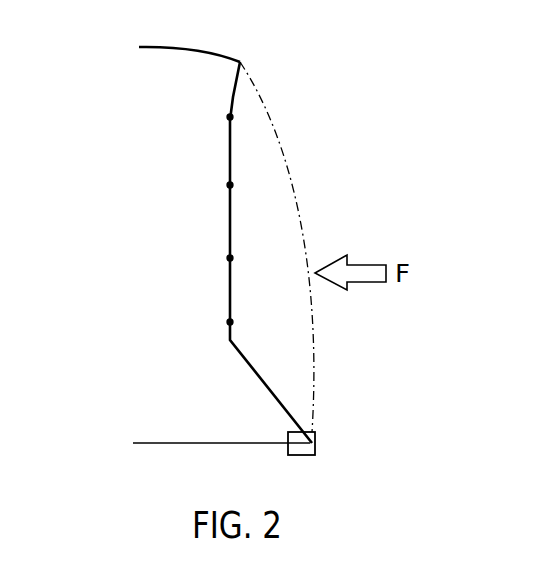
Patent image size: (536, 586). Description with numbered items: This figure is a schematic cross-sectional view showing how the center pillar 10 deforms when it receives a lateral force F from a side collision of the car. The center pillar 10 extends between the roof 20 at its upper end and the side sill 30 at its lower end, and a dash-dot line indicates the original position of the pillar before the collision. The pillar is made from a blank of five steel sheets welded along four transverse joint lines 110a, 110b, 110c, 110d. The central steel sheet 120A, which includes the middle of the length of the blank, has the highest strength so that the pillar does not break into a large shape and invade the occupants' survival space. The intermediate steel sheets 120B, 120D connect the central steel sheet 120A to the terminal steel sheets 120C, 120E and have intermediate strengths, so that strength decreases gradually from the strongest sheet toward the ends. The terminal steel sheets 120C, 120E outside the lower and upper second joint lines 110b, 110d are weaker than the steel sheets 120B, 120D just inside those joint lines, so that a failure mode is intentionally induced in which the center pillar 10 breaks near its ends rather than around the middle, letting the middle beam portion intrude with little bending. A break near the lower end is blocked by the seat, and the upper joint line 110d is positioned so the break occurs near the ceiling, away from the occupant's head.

The center pillar 10 is at (245, 210).
The roof 20 is at (200, 51).
The side sill 30 is at (302, 455).
The joint line 110a is at (230, 258).
The joint line 110b is at (230, 322).
The joint line 110c is at (230, 185).
The joint line 110d is at (230, 117).
The central steel sheet 120A is at (230, 223).
The intermediate steel sheet 120B is at (230, 290).
The terminal steel sheet 120C is at (248, 368).
The intermediate steel sheet 120D is at (230, 153).
The terminal steel sheet 120E is at (236, 85).